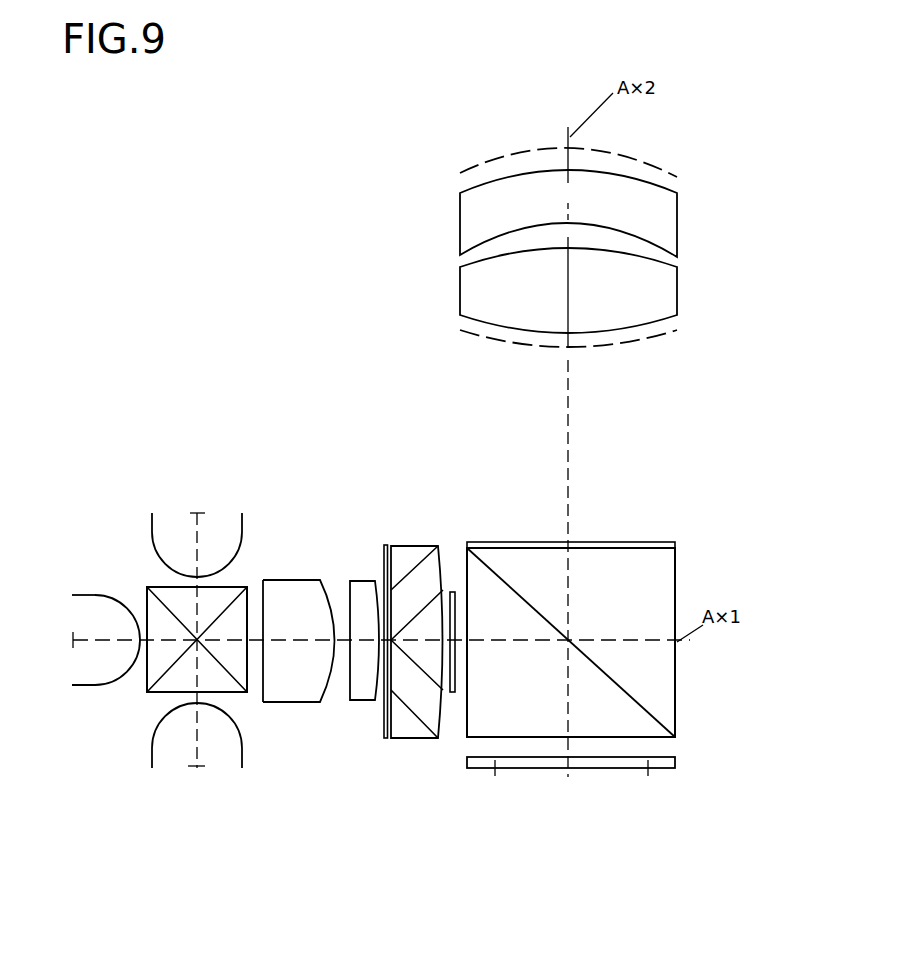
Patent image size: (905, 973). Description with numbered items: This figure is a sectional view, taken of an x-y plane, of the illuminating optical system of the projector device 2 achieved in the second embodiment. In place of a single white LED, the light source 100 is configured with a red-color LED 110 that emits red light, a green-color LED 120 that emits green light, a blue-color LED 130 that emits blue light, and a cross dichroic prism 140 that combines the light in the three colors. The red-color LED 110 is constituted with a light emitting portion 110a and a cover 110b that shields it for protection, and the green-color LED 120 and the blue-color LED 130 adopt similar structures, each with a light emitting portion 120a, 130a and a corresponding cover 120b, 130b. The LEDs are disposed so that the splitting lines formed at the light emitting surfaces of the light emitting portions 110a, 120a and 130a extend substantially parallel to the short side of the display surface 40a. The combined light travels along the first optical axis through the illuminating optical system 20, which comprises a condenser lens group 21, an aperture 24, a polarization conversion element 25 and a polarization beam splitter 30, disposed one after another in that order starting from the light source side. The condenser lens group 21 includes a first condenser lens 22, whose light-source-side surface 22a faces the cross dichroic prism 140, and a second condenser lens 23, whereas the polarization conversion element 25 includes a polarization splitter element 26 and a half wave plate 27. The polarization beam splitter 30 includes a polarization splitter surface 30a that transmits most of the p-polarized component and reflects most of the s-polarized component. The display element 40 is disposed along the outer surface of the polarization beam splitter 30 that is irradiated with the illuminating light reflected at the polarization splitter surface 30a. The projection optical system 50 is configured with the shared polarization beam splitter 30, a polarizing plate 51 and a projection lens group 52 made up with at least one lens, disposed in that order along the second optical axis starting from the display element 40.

The projector device 2 is at (343, 307).
The illuminating optical system 20 is at (655, 812).
The condenser lens group 21 is at (368, 753).
The first condenser lens 22 is at (298, 702).
The lens surface 22a is at (263, 703).
The second condenser lens 23 is at (347, 702).
The aperture 24 is at (388, 738).
The polarization conversion element 25 is at (458, 785).
The polarization splitter element 26 is at (410, 738).
The half wave plate 27 is at (453, 692).
The polarization beam splitter 30 is at (676, 582).
The polarization splitter surface 30a is at (655, 704).
The display element 40 is at (676, 763).
The display surface 40a is at (648, 783).
The projection optical system 50 is at (750, 135).
The polarizing plate 51 is at (648, 548).
The projection lens group 52 is at (703, 135).
The light source 100 is at (243, 872).
The red-color LED 110 is at (255, 513).
The light emitting portion 110a is at (203, 512).
The cover 110b is at (150, 532).
The green-color LED 120 is at (137, 693).
The light emitting portion 120a is at (70, 635).
The second lens side surface 120b is at (83, 593).
The blue-color LED 130 is at (243, 818).
The light emitting portion 130a is at (203, 768).
The third lens side surface 130b is at (152, 757).
The cross dichroic prism 140 is at (155, 693).